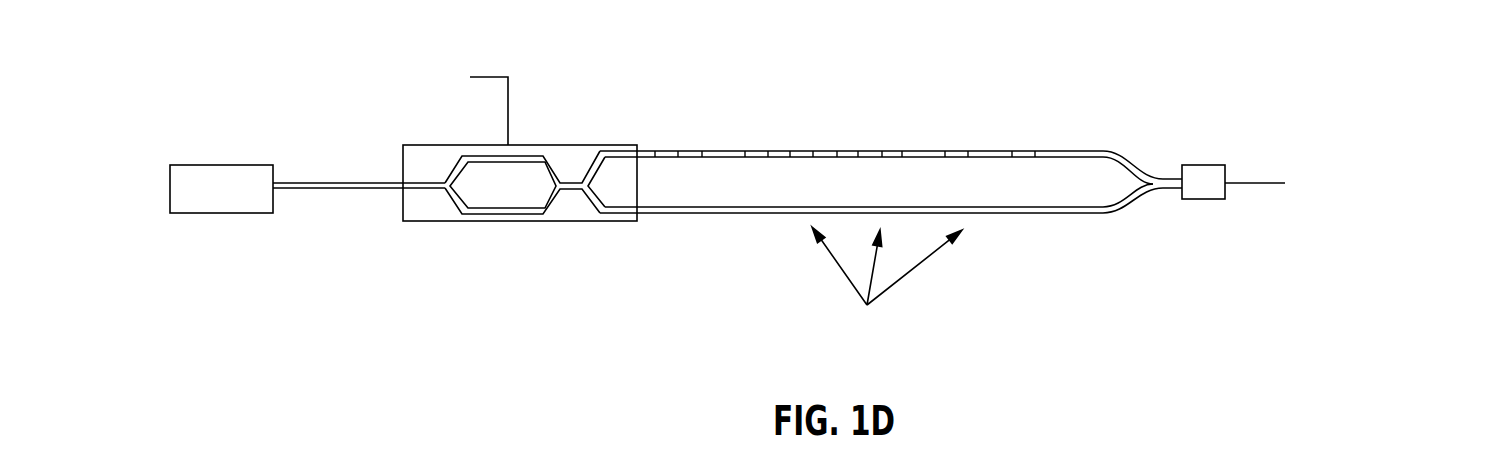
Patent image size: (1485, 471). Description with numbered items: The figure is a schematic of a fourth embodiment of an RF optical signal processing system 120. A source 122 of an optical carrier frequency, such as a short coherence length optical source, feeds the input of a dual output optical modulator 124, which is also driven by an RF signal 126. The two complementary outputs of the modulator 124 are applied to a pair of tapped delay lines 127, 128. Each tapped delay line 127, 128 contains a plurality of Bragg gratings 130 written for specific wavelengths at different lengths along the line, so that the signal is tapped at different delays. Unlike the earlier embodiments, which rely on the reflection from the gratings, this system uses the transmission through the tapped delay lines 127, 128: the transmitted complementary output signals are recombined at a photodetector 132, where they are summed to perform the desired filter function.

The RF optical signal processing system 120 is at (1400, 123).
The source of an optical carrier frequency 122 is at (223, 165).
The dual output optical modulator 124 is at (403, 221).
The RF signal 126 is at (508, 100).
The first output fiber 127 is at (656, 150).
The tapped delay line 128 is at (670, 213).
The Bragg gratings 130 is at (945, 140).
The photodetector 132 is at (1197, 165).